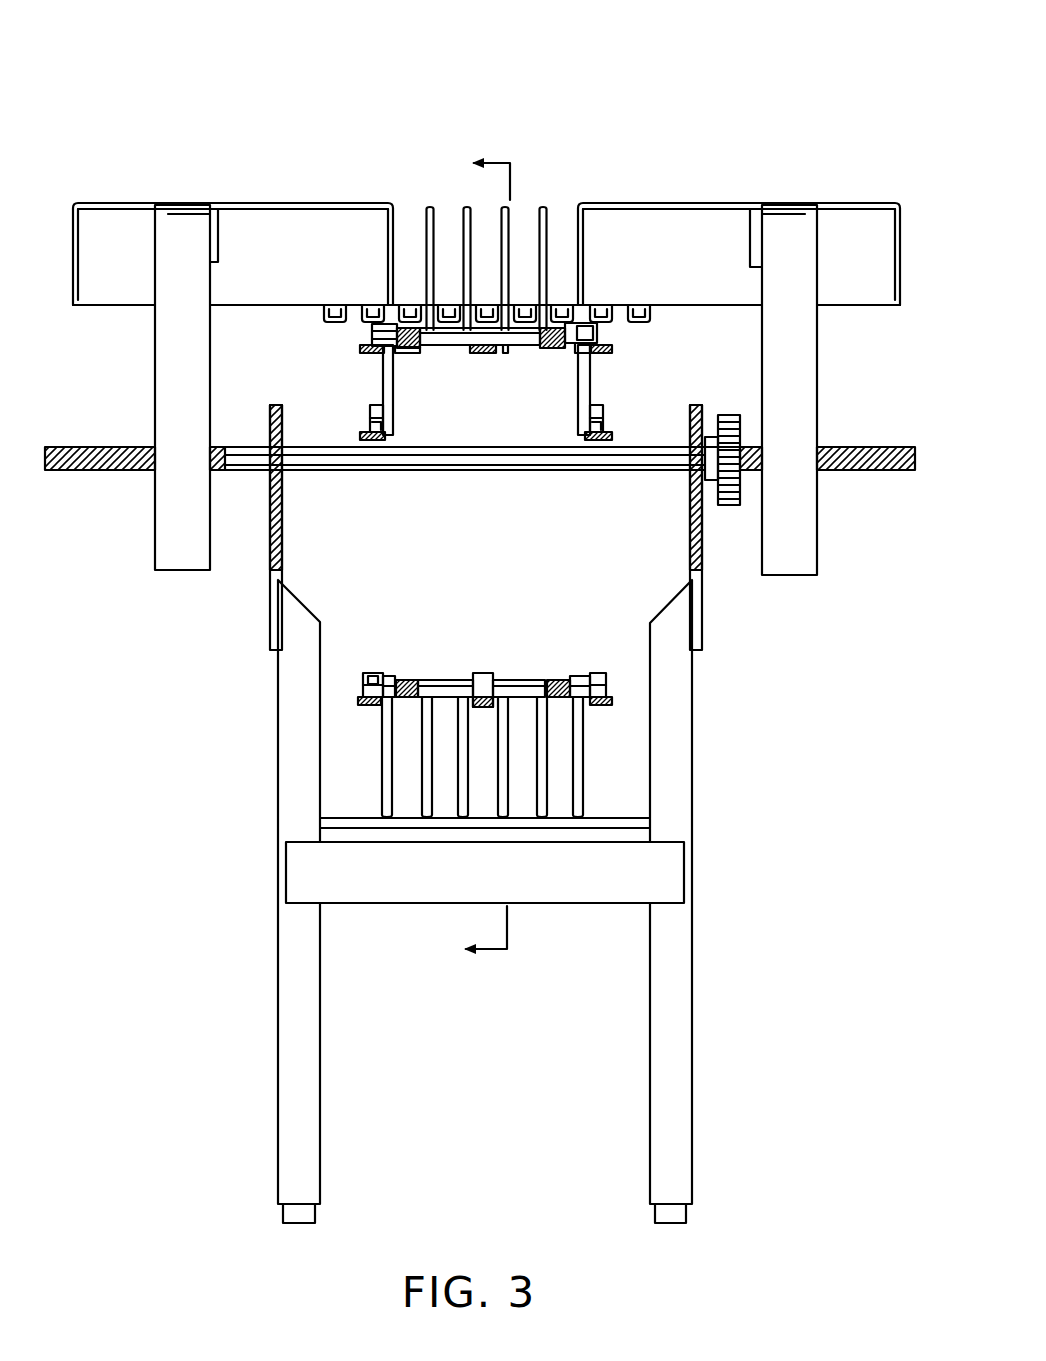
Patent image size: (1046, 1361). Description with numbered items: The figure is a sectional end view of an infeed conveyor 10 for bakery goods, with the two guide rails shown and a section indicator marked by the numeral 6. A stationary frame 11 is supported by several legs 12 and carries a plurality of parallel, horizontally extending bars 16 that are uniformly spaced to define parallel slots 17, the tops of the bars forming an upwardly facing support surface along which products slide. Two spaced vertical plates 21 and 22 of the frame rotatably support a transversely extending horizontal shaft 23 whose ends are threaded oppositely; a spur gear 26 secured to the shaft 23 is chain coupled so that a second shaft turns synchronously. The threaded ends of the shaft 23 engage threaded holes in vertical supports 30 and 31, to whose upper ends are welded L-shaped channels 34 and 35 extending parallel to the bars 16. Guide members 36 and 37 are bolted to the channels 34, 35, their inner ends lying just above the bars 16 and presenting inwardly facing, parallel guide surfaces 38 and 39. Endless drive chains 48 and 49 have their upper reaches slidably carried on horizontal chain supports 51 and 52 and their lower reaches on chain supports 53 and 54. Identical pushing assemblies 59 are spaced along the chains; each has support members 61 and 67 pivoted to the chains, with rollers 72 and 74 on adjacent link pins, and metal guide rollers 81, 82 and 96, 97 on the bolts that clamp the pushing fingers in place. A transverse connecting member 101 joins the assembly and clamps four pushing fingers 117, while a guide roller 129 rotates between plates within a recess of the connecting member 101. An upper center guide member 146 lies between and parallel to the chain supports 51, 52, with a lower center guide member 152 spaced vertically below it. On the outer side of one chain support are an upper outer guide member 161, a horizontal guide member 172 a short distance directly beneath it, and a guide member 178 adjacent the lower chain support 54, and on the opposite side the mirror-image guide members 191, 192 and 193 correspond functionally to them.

The infeed conveyor 10 is at (785, 119).
The stationary frame 11 is at (691, 801).
The legs 12 is at (669, 1049).
The bars 16 is at (336, 296).
The slots 17 is at (628, 282).
The vertical plate 21 is at (274, 610).
The vertical plate 22 is at (697, 603).
The horizontal shaft 23 is at (855, 478).
The spur gear 26 is at (728, 508).
The vertical support 30 is at (804, 548).
The vertical support 31 is at (168, 527).
The L-shaped channel 34 is at (238, 233).
The L-shaped channel 35 is at (752, 241).
The guide member 36 is at (109, 222).
The guide member 37 is at (851, 228).
The guide surface 38 is at (408, 300).
The guide surface 39 is at (576, 323).
The endless drive chain 48 is at (563, 327).
The endless drive chain 49 is at (404, 327).
The chain support 51 is at (578, 350).
The chain support 52 is at (408, 348).
The chain support 53 is at (565, 705).
The chain support 54 is at (395, 708).
The pushing assembly 59 is at (438, 201).
The support member 61 is at (576, 400).
The support member 67 is at (392, 392).
The roller 72 is at (598, 333).
The roller 74 is at (372, 336).
The guide roller 81 is at (603, 412).
The guide roller 82 is at (604, 430).
The roller 96 is at (370, 408).
The roller 97 is at (368, 422).
The connecting member 101 is at (448, 332).
The pushing fingers 117 is at (541, 207).
The guide roller 129 is at (476, 350).
The upper center guide member 146 is at (506, 350).
The lower center guide member 152 is at (505, 695).
The upper outer guide member 161 is at (612, 352).
The horizontal guide member 172 is at (612, 436).
The guide member 178 is at (608, 700).
The horizontal guide member 191 is at (362, 350).
The horizontal guide member 192 is at (362, 436).
The horizontal guide member 193 is at (365, 697).
The section line 6 is at (473, 561).